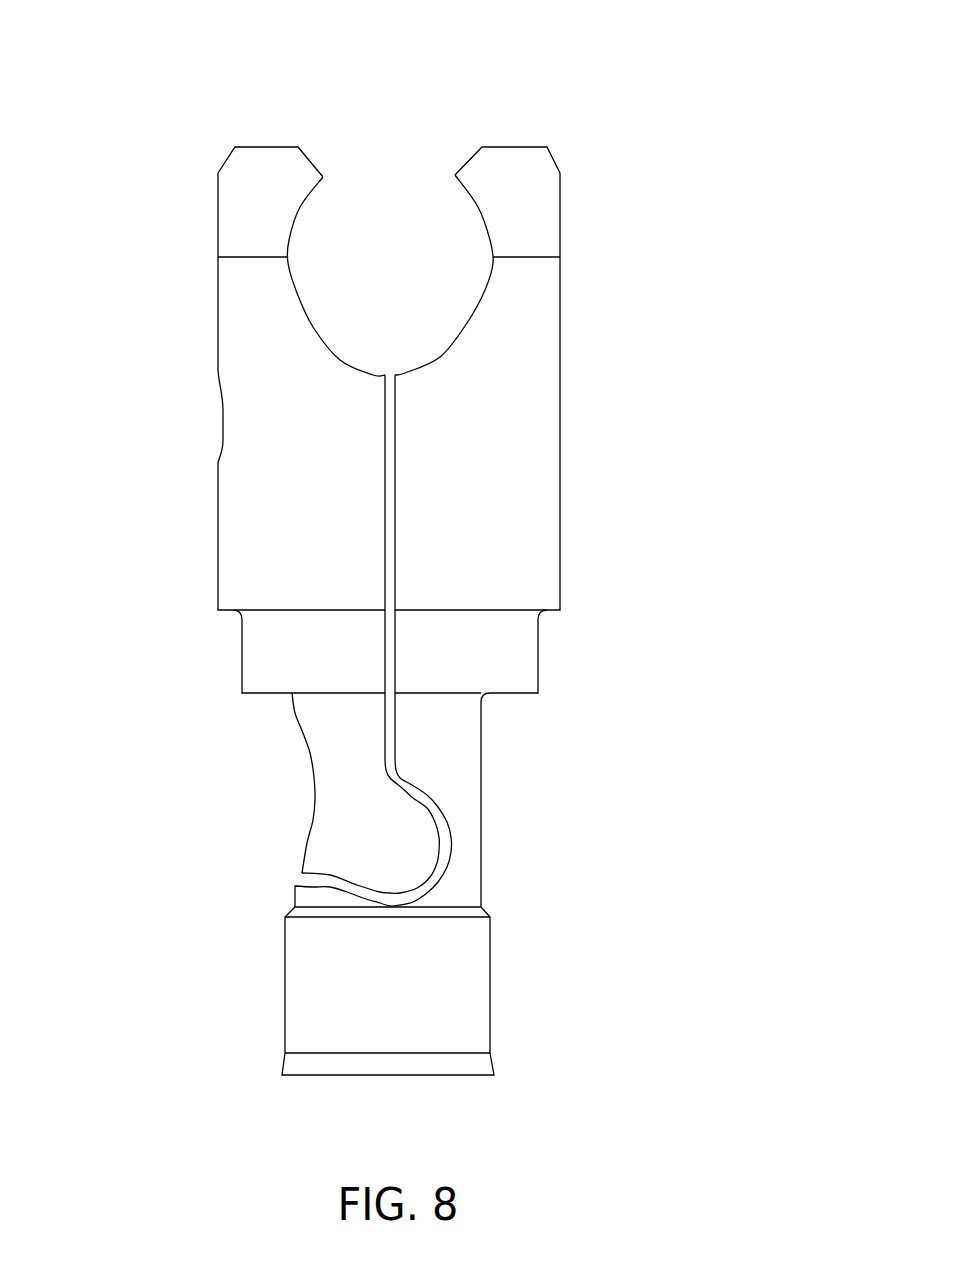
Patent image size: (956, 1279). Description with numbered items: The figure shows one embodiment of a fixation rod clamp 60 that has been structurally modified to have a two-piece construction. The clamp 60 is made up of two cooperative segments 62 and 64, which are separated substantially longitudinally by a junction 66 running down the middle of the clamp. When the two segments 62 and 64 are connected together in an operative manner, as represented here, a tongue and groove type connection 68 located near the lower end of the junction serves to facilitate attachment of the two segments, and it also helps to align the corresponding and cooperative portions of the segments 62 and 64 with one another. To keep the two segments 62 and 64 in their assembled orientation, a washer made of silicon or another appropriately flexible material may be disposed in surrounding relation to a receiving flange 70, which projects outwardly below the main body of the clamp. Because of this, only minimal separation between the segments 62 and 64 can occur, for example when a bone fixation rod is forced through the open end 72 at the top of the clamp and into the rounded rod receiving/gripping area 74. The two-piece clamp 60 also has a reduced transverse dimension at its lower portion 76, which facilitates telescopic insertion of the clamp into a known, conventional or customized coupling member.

The fixation rod clamp 60 is at (668, 327).
The segment 62 is at (562, 480).
The segment 64 is at (218, 560).
The junction 66 is at (392, 745).
The tongue and groove connection 68 is at (450, 850).
The receiving flange 70 is at (538, 657).
The open end 72 is at (310, 160).
The rod receiving/gripping area 74 is at (317, 343).
The lower portion 76 is at (518, 917).